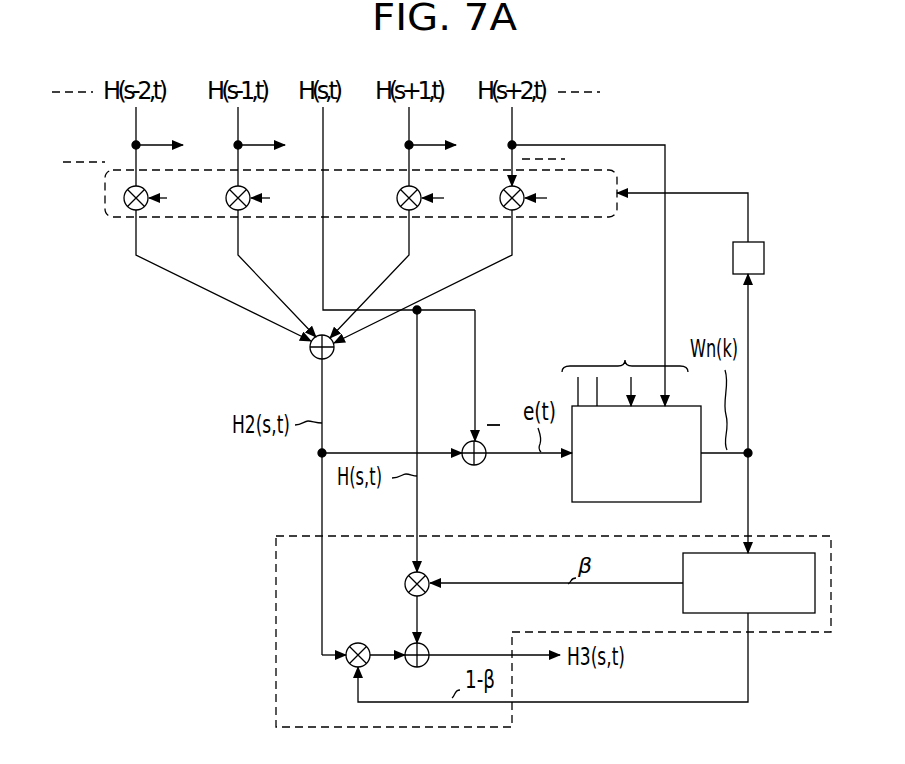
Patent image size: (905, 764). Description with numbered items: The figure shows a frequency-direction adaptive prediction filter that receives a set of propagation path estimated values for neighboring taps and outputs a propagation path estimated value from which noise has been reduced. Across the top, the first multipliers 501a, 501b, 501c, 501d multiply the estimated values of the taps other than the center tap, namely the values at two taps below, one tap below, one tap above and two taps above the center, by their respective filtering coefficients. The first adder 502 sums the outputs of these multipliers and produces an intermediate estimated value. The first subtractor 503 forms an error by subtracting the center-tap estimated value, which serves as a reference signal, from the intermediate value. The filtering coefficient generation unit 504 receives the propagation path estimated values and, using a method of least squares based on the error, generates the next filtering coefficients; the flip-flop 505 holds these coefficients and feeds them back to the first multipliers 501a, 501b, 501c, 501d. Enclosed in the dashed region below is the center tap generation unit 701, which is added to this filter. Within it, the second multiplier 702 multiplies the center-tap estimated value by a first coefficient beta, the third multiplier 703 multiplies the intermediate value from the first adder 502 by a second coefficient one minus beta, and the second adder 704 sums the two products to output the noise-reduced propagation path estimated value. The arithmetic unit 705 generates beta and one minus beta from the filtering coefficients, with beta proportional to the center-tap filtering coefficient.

The first multiplier 501a is at (126, 202).
The first multiplier 501b is at (228, 203).
The first multiplier 501c is at (401, 202).
The first multiplier 501d is at (522, 206).
The first adder 502 is at (314, 356).
The first subtractor 503 is at (473, 466).
The filtering coefficient generation unit 504 is at (572, 488).
The flip-flop 505 is at (759, 241).
The center tap generation unit 701 is at (276, 619).
The second multiplier 702 is at (405, 578).
The third multiplier 703 is at (350, 667).
The second adder 704 is at (425, 647).
The arithmetic unit 705 is at (683, 602).